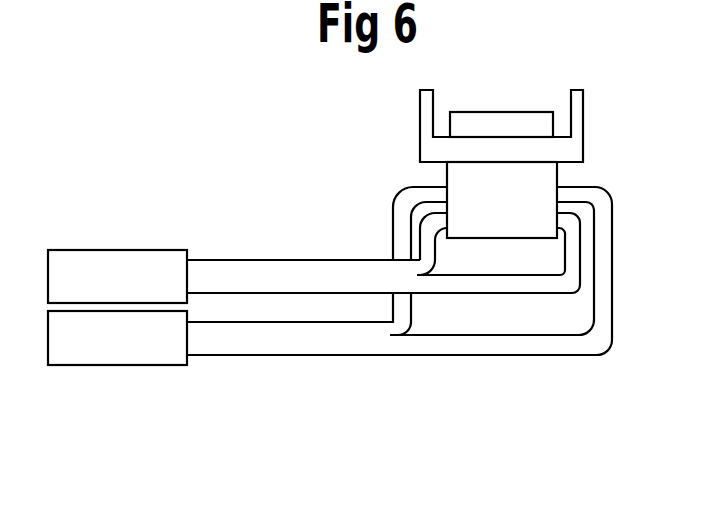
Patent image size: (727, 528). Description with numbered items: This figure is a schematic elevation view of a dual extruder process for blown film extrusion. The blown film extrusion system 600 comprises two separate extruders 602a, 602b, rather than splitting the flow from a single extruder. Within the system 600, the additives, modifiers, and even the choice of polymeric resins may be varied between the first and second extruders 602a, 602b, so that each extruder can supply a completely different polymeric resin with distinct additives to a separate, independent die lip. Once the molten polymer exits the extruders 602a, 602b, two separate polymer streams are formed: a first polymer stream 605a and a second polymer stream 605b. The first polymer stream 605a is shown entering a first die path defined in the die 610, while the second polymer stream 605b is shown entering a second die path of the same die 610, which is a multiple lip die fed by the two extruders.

The blown film extrusion system 600 is at (143, 147).
The first extruder 602a is at (108, 248).
The second extruder 602b is at (105, 365).
The first polymer stream 605a is at (268, 278).
The second polymer stream 605b is at (270, 335).
The die 610 is at (503, 182).